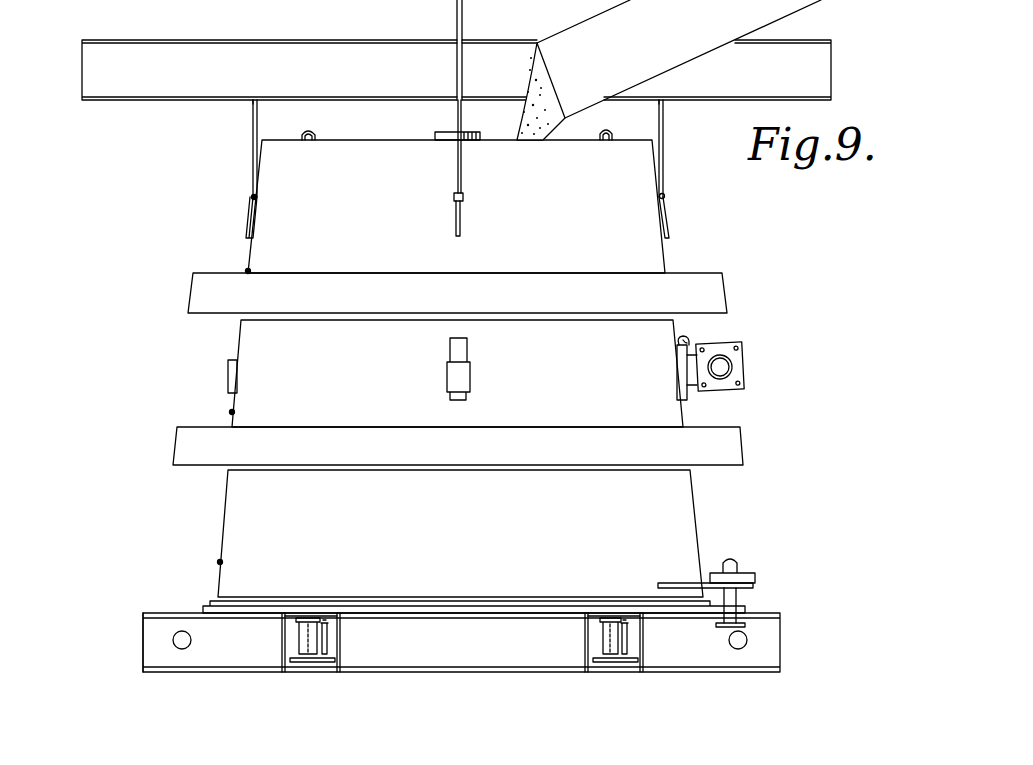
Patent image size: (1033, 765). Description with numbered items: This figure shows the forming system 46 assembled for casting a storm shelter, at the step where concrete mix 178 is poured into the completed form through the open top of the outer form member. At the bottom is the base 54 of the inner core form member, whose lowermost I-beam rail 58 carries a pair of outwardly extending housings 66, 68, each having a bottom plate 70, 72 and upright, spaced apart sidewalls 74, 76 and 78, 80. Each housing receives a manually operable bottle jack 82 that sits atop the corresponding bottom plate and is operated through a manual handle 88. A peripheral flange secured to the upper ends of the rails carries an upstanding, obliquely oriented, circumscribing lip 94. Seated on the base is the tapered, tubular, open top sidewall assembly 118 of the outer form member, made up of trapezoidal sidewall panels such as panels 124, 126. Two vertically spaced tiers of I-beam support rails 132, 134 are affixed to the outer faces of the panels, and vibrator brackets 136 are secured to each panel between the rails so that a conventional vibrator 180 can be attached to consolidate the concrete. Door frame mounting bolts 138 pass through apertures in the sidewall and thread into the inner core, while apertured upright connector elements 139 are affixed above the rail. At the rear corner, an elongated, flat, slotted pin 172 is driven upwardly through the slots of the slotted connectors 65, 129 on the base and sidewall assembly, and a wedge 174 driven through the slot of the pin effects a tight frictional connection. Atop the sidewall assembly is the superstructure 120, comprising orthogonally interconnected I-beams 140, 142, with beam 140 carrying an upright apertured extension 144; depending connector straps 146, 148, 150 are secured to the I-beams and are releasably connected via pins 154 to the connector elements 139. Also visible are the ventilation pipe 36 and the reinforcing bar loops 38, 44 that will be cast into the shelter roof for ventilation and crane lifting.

The ventilation pipe 36 is at (453, 136).
The reinforcing bar loop 38 is at (604, 137).
The reinforcing bar loop 44 is at (305, 137).
The forming system 46 is at (172, 238).
The base 54 is at (142, 619).
The I-beam rail 58 is at (162, 630).
The slotted connector 65 is at (752, 607).
The housing 66 is at (355, 614).
The housing 68 is at (567, 613).
The bottom plate 70 is at (388, 662).
The bottom plate 72 is at (585, 672).
The sidewall 74 is at (282, 646).
The sidewall 76 is at (340, 650).
The sidewall 78 is at (585, 643).
The sidewall 80 is at (643, 645).
The bottle jack 82 is at (305, 632).
The manual handle 88 is at (327, 625).
The lip 94 is at (233, 603).
The sidewall assembly 118 is at (146, 420).
The superstructure 120 is at (155, 113).
The sidewall panel 124 is at (408, 506).
The sidewall panel 126 is at (687, 417).
The slotted connector 129 is at (683, 587).
The I-beam support rail 132 is at (703, 293).
The I-beam support rail 134 is at (720, 447).
The vibrator bracket 136 is at (230, 377).
The door frame mounting bolt 138 is at (248, 270).
The connector element 139 is at (250, 222).
The I-beam 140 is at (455, 82).
The I-beam 142 is at (813, 78).
The extension 144 is at (452, 9).
The connector strap 146 is at (253, 124).
The connector strap 148 is at (458, 173).
The connector strap 150 is at (665, 155).
The pin 154 is at (257, 197).
The slotted pin 172 is at (737, 598).
The wedge 174 is at (755, 577).
The concrete mix 178 is at (535, 100).
The vibrator 180 is at (720, 367).